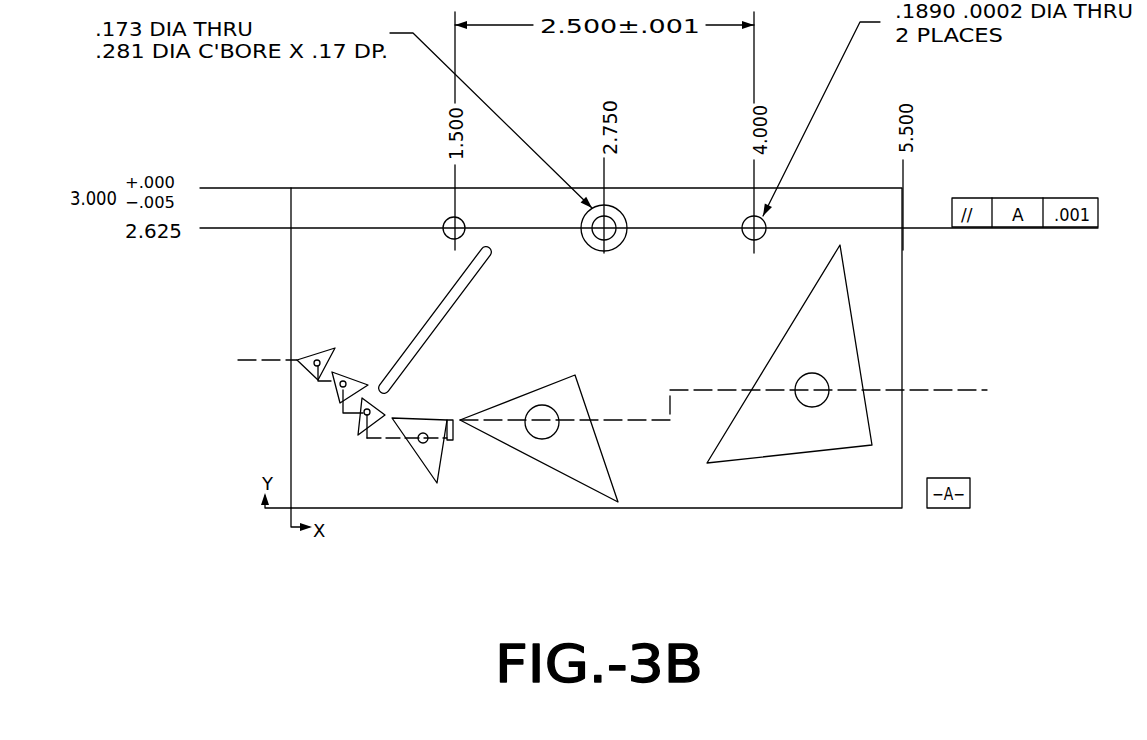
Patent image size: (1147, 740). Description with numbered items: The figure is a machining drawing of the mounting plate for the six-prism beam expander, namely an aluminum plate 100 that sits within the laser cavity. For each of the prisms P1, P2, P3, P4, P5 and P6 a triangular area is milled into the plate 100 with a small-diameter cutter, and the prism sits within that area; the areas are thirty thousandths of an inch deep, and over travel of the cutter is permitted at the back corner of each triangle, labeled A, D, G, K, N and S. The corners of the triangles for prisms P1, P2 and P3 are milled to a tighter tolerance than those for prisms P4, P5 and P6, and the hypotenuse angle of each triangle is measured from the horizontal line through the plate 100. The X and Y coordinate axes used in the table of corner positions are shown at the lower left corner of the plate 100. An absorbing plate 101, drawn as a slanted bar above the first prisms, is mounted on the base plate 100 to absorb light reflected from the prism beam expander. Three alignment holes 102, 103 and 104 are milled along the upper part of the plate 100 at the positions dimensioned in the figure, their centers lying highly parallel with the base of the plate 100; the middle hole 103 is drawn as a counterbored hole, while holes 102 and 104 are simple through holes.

The aluminum plate 100 is at (903, 332).
The absorbing plate 101 is at (438, 305).
The alignment hole 102 is at (462, 221).
The alignment hole 103 is at (618, 218).
The alignment hole 104 is at (762, 218).
The prism P1 is at (310, 371).
The prism P2 is at (336, 387).
The prism P3 is at (359, 421).
The prism P4 is at (423, 463).
The prism P5 is at (570, 477).
The prism P6 is at (797, 452).